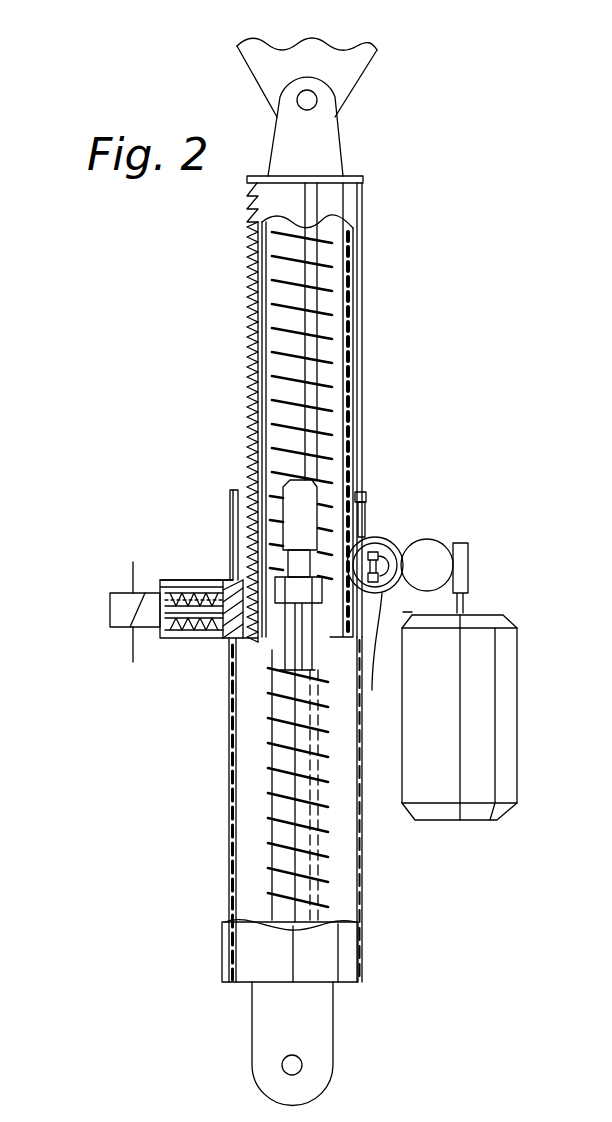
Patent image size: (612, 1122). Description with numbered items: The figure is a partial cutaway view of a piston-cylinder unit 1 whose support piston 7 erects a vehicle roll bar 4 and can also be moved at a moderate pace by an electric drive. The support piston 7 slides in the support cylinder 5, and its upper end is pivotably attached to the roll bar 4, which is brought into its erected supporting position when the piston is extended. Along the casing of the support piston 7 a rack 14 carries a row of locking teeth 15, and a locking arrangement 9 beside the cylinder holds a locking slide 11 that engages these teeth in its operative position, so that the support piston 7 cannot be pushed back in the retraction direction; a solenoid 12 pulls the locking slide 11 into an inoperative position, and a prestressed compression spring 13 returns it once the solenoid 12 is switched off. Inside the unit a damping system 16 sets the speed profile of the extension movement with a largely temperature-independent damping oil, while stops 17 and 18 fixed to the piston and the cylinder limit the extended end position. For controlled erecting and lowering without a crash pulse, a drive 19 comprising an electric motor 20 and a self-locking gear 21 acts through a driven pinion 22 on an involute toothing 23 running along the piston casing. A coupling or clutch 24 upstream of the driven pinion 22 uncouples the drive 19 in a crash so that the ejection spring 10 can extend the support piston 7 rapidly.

The piston-cylinder unit 1 is at (380, 486).
The roll bar 4 is at (275, 67).
The support cylinder 5 is at (345, 963).
The support piston 7 is at (257, 193).
The locking arrangement 9 is at (207, 627).
The ejection spring 10 is at (270, 805).
The locking slide 11 is at (222, 583).
The solenoid 12 is at (117, 610).
The compression spring 13 is at (170, 580).
The rack 14 is at (243, 290).
The locking teeth 15 is at (243, 337).
The damping system 16 is at (273, 647).
The stop 17 is at (366, 505).
The stop 18 is at (360, 492).
The drive 19 is at (500, 605).
The electric motor 20 is at (508, 762).
The self-locking gear 21 is at (443, 538).
The driven pinion 22 is at (376, 653).
The involute toothing 23 is at (358, 257).
The coupling or clutch 24 is at (380, 580).